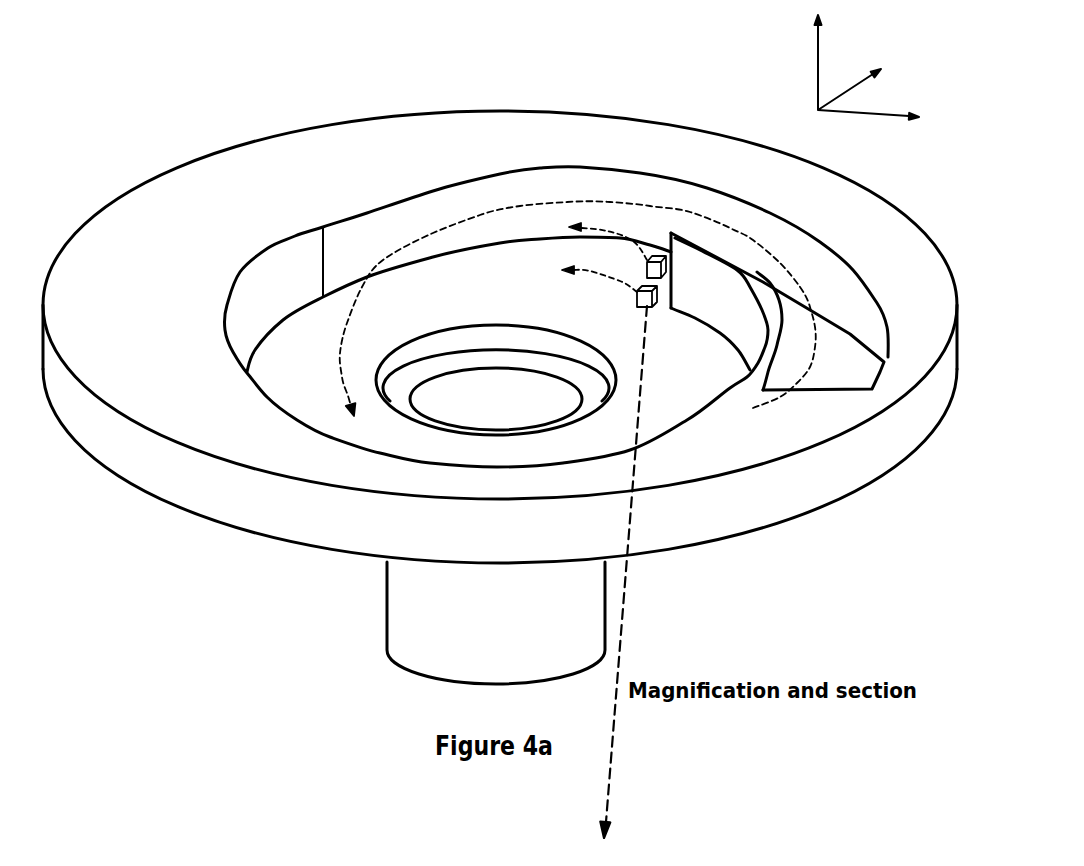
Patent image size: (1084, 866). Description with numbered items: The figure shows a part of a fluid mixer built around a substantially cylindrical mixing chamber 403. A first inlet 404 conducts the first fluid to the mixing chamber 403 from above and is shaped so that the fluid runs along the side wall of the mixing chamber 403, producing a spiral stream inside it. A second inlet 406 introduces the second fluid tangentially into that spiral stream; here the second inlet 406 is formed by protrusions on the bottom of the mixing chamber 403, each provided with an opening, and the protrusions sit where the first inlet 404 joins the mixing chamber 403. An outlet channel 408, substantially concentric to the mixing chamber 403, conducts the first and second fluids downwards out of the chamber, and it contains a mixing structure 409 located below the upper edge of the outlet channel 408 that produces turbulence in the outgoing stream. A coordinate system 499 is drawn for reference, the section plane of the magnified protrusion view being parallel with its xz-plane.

The mixing chamber 403 is at (520, 270).
The first inlet 404 is at (800, 263).
The second inlet 406 is at (643, 287).
The outlet channel 408 is at (480, 420).
The mixing structure 409 is at (570, 383).
The coordinate system 499 is at (873, 42).